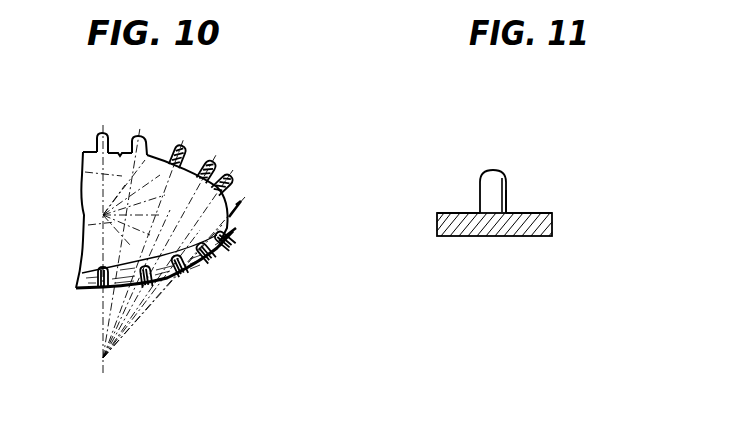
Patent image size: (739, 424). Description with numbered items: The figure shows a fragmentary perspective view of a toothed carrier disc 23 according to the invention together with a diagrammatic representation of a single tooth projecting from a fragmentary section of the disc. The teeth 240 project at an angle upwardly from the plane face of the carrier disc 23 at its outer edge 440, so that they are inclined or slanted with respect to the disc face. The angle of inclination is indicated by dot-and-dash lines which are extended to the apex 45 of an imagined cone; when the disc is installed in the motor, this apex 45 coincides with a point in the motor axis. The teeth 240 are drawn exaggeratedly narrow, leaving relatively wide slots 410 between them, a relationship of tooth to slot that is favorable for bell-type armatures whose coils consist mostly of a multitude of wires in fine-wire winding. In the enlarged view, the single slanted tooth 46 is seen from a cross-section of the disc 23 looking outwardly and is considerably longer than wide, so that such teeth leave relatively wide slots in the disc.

In FIG. 10, the carrier disc 23 is at (85, 239).
In FIG. 11, the carrier disc 23 is at (552, 225).
In FIG. 10, the apex 45 is at (103, 358).
In FIG. 11, the projection 46 is at (489, 170).
In FIG. 10, the teeth 240 is at (230, 173).
In FIG. 11, the teeth 240 is at (502, 192).
In FIG. 10, the slots 410 is at (160, 150).
In FIG. 11, the slots 410 is at (461, 206).
In FIG. 10, the outer edge 440 is at (126, 147).
In FIG. 11, the outer edge 440 is at (538, 212).